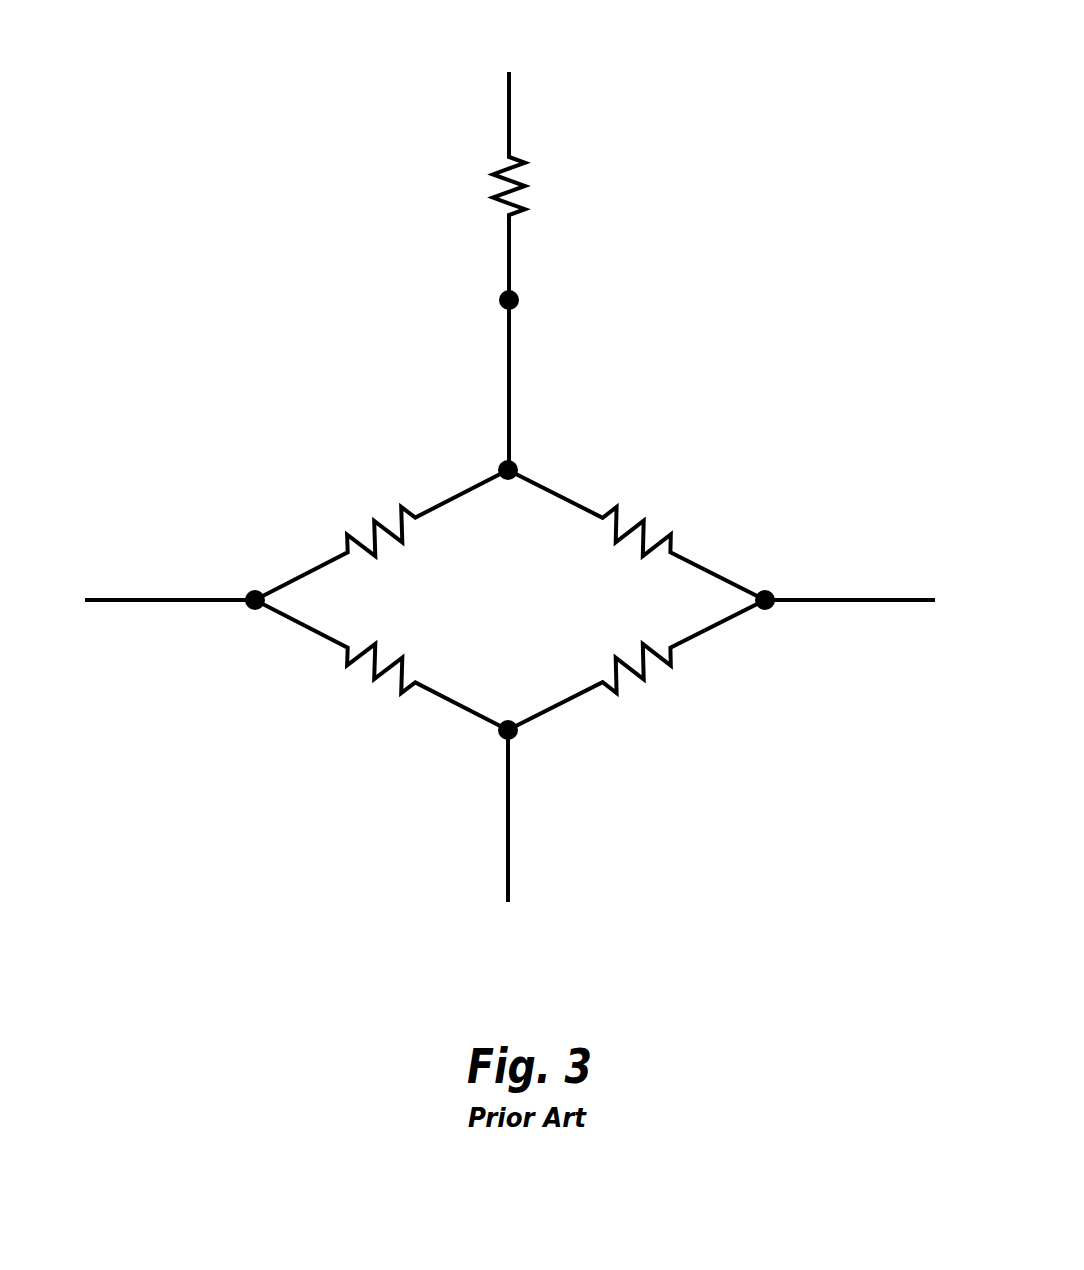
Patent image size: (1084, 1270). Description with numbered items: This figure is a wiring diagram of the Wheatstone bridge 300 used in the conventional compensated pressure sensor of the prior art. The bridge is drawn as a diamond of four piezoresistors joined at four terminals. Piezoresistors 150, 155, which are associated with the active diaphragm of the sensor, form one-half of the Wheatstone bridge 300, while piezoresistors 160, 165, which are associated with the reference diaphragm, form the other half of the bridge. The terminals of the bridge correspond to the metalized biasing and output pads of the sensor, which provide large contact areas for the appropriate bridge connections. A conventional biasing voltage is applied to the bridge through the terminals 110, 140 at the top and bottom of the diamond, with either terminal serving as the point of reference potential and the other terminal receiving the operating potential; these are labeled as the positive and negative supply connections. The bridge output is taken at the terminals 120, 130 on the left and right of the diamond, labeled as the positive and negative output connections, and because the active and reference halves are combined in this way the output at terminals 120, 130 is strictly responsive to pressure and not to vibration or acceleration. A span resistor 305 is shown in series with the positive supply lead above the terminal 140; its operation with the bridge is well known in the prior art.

The Wheatstone bridge 300 is at (218, 349).
The span resistor 305 is at (495, 173).
The biasing terminal 140 is at (505, 467).
The output terminal 130 is at (773, 600).
The output terminal 120 is at (252, 603).
The biasing terminal 110 is at (507, 732).
The piezoresistor 155 is at (381, 535).
The piezoresistor 165 is at (636, 535).
The piezoresistor 150 is at (381, 665).
The piezoresistor 160 is at (636, 665).